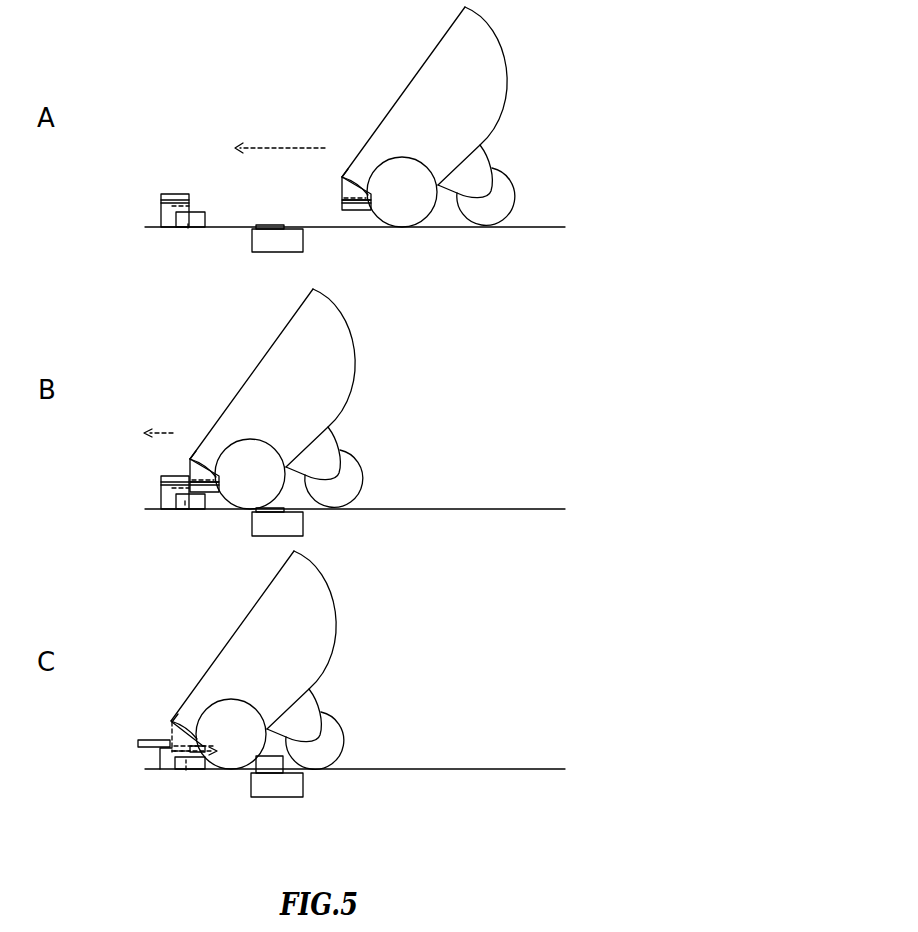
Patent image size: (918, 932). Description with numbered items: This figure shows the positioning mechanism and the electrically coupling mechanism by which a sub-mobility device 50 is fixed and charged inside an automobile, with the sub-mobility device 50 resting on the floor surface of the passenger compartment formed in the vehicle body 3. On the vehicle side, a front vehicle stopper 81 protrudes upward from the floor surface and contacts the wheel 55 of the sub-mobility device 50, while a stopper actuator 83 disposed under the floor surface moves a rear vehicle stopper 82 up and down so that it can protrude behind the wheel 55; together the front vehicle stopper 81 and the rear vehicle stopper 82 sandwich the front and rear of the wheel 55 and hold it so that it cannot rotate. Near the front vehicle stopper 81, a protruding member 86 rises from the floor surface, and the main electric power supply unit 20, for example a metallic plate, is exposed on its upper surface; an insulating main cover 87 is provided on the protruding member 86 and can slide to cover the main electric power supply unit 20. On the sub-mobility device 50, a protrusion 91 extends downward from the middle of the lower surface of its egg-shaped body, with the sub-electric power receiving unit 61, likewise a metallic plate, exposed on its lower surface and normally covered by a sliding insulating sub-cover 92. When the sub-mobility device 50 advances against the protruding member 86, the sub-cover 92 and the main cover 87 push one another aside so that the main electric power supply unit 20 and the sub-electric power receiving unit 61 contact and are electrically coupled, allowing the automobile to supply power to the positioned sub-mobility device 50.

The vehicle body 3 is at (527, 227).
The main electric power supply unit 20 is at (188, 228).
The sub-mobility device 50 is at (403, 88).
The wheel 55 is at (410, 202).
The sub-electric power receiving unit 61 is at (343, 175).
The front vehicle stopper 81 is at (201, 225).
The rear vehicle stopper 82 is at (272, 232).
The stopper actuator 83 is at (263, 240).
The protruding member 86 is at (161, 212).
The main cover 87 is at (177, 192).
The protrusion 91 is at (341, 188).
The sub-cover 92 is at (358, 213).